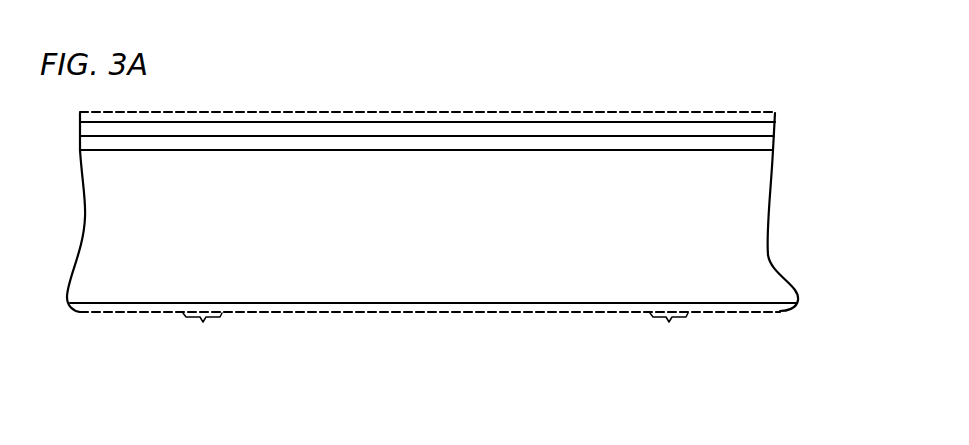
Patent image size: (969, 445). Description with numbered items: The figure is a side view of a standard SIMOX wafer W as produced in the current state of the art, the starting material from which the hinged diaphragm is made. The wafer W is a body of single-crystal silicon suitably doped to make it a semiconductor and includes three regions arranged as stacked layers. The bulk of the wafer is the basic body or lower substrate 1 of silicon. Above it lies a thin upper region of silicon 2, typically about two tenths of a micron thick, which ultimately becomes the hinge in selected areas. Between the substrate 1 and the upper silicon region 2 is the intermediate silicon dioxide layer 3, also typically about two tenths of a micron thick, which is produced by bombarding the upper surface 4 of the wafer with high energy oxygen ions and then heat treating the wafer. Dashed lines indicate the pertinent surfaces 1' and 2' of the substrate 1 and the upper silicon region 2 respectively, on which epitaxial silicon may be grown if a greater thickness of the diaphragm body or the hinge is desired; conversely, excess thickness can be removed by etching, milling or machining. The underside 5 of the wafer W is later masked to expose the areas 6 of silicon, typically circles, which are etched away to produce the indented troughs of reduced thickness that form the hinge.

The SIMOX wafer W is at (443, 99).
The lower substrate 1 is at (440, 212).
The surface of substrate 1' is at (455, 325).
The upper region of silicon 2 is at (454, 123).
The surface of upper silicon region 2' is at (433, 97).
The silicon dioxide layer 3 is at (770, 145).
The upper surface 4 is at (320, 118).
The underside 5 is at (343, 322).
The areas to be etched 6 is at (435, 328).